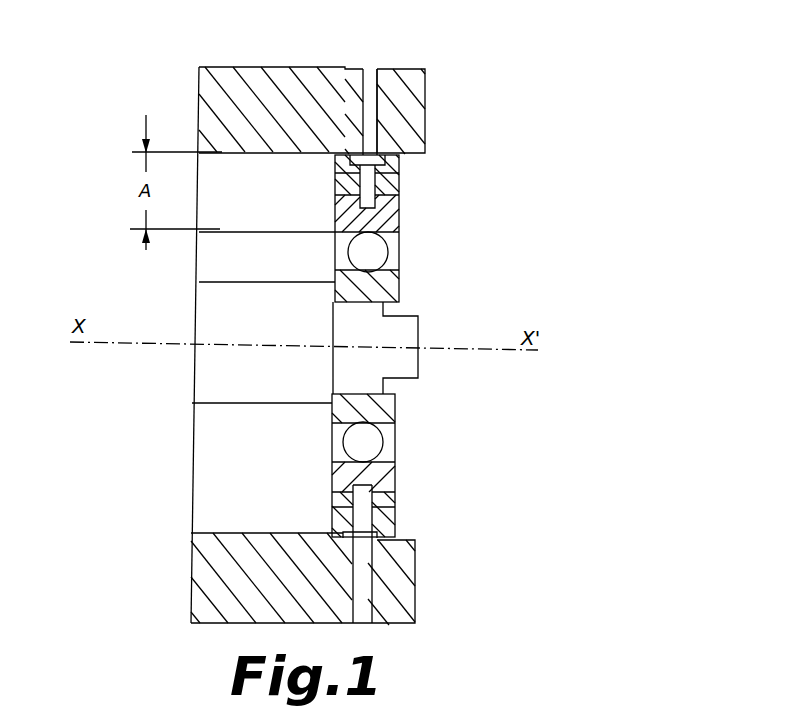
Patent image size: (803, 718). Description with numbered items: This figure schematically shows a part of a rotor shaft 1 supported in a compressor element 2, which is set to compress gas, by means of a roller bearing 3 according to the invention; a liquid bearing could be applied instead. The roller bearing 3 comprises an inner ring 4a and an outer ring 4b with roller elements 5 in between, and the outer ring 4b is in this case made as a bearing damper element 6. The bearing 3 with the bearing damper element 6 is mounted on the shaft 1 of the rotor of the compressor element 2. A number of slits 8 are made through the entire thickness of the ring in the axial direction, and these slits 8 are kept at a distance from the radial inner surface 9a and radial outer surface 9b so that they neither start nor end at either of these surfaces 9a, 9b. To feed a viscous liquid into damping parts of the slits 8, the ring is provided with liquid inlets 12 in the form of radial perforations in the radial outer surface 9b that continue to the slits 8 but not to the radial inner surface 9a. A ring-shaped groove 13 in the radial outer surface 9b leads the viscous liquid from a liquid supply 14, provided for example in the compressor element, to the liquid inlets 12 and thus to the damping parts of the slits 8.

The rotor shaft 1 is at (230, 311).
The compressor element 2 is at (108, 86).
The roller bearing 3 is at (543, 181).
The inner ring 4a is at (400, 285).
The outer ring 4b is at (400, 217).
The roller elements 5 is at (370, 247).
The bearing damper element 6 is at (396, 475).
The slits 8 is at (400, 202).
The radial inner surface 9a is at (396, 452).
The radial outer surface 9b is at (337, 550).
The liquid inlet 12 is at (401, 173).
The ring-shaped groove 13 is at (357, 157).
The liquid supply 14 is at (374, 96).